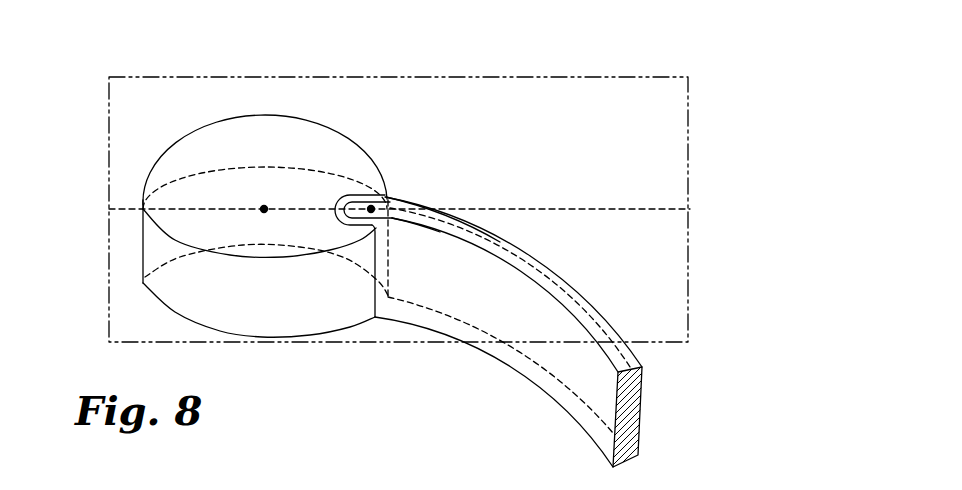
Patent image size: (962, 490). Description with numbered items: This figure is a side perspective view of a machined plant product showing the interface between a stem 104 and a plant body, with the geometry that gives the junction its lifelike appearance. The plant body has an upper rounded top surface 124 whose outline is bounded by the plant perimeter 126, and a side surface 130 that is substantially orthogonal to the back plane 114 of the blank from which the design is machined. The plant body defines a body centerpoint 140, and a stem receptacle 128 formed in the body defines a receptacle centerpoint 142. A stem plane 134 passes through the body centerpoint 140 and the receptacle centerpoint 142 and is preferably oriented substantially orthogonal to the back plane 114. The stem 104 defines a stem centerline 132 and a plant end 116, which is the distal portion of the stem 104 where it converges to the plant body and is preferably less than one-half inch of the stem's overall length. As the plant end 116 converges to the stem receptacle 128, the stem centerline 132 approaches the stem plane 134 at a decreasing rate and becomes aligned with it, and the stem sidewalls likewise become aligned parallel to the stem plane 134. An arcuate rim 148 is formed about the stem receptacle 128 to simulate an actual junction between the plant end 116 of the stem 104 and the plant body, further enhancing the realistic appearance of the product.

The stem 104 is at (457, 292).
The back plane 114 is at (260, 313).
The plant end 116 is at (390, 196).
The top surface 124 is at (220, 140).
The plant perimeter 126 is at (313, 337).
The stem receptacle 128 is at (350, 192).
The side surface 130 is at (152, 250).
The stem centerline 132 is at (562, 281).
The stem plane 134 is at (168, 342).
The body centerpoint 140 is at (264, 209).
The receptacle centerpoint 142 is at (371, 209).
The arcuate rim 148 is at (407, 217).